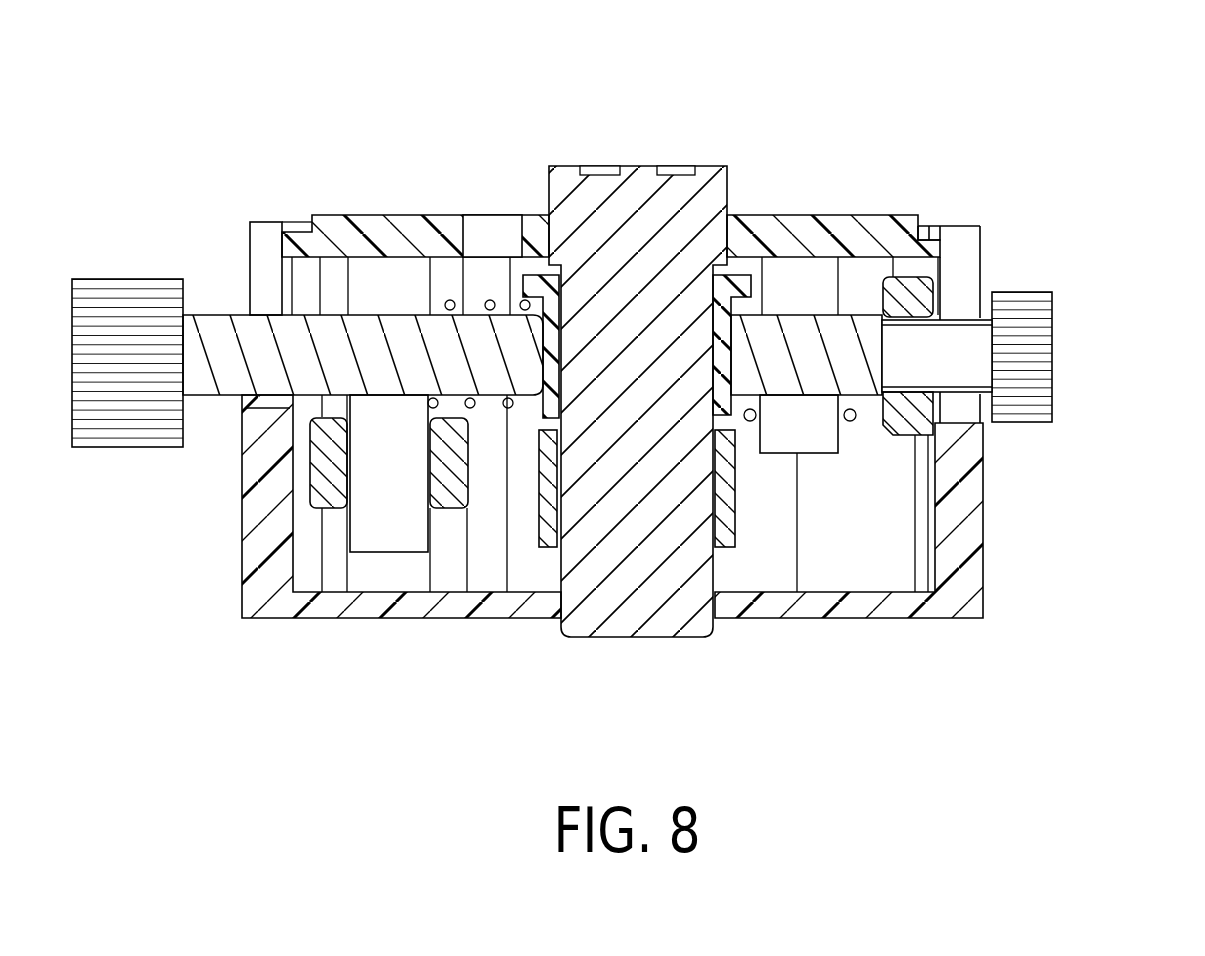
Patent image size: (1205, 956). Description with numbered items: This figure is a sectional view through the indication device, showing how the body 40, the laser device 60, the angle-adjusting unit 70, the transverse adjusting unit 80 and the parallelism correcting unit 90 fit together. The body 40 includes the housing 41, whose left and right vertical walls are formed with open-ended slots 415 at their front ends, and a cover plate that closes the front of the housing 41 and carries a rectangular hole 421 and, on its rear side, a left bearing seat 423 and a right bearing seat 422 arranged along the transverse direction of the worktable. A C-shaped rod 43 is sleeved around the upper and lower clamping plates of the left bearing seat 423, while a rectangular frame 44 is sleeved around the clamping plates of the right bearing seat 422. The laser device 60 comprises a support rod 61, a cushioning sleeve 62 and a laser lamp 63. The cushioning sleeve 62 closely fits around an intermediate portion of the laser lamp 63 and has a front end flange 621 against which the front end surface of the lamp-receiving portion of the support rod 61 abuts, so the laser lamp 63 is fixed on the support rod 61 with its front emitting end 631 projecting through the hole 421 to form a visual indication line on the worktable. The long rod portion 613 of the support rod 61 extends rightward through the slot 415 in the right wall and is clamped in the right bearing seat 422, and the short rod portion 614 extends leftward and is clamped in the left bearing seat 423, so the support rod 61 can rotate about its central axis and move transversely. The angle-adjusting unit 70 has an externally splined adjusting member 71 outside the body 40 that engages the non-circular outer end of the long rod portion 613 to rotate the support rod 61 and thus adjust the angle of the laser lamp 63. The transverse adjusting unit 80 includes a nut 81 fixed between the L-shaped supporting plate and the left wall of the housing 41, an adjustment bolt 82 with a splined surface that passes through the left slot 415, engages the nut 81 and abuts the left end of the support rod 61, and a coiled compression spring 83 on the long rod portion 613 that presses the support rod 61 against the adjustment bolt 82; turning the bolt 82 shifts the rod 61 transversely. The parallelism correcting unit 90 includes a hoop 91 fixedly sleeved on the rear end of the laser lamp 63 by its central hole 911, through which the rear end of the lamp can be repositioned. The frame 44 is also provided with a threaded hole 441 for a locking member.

The body 40 is at (995, 533).
The housing 41 is at (968, 582).
The open-ended slots 415 is at (268, 238).
The rectangular hole 421 is at (493, 233).
The right bearing seat 422 is at (373, 538).
The left bearing seat 423 is at (810, 435).
The C-shaped rod 43 is at (847, 428).
The rectangular frame 44 is at (330, 502).
The bearing 441 is at (428, 480).
The laser device 60 is at (687, 160).
The support rod 61 is at (388, 312).
The long rod portion 613 is at (215, 323).
The short rod portion 614 is at (797, 325).
The cushioning sleeve 62 is at (535, 272).
The front end flange 621 is at (580, 290).
The laser lamp 63 is at (655, 613).
The front emitting end 631 is at (610, 172).
The angle-adjusting unit 70 is at (115, 274).
The adjusting member 71 is at (83, 313).
The transverse adjusting unit 80 is at (1039, 282).
The nut 81 is at (898, 283).
The adjustment bolt 82 is at (1038, 350).
The coiled compression spring 83 is at (447, 298).
The parallelism correcting unit 90 is at (742, 512).
The hoop 91 is at (545, 540).
The central hole 911 is at (562, 515).